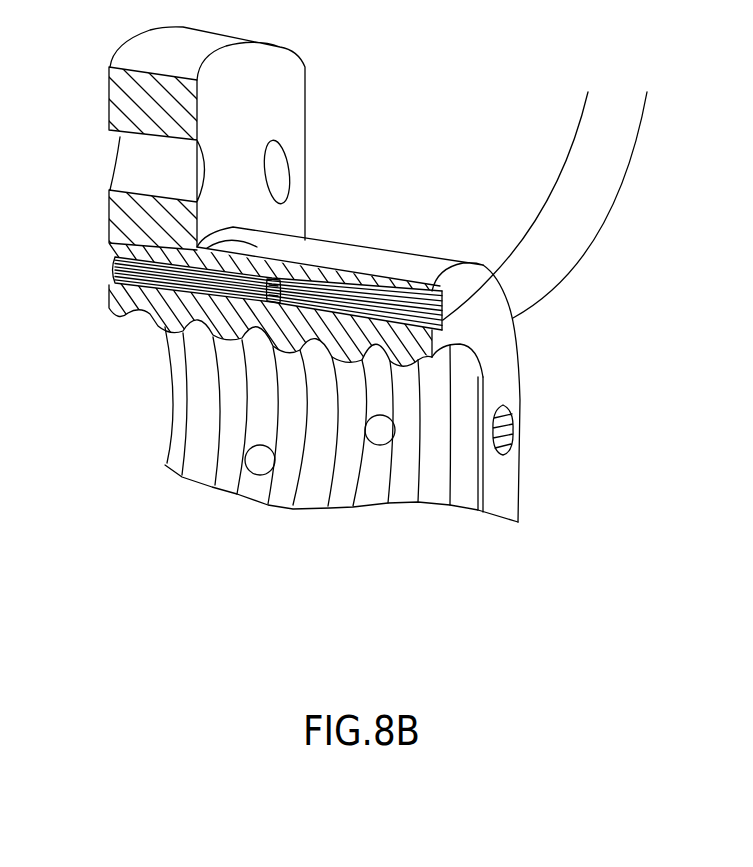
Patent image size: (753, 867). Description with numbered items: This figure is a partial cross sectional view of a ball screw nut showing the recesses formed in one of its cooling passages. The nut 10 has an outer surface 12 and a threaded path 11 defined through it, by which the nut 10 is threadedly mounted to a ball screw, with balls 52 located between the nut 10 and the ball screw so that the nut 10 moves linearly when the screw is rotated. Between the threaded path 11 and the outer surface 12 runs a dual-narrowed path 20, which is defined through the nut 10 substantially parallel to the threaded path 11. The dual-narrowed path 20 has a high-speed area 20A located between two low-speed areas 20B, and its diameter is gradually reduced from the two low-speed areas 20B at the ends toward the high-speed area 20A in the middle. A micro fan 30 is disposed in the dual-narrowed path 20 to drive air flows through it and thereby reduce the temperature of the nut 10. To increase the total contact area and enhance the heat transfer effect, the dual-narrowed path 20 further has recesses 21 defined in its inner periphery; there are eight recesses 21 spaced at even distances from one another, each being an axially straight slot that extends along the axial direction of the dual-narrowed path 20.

The nut 10 is at (527, 353).
The threaded path 11 is at (437, 462).
The outer surface 12 is at (205, 246).
The dual-narrowed path 20 is at (677, 63).
The high-speed area 20A is at (295, 262).
The low-speed area 20B is at (170, 250).
The recess 21 is at (553, 189).
The micro fan 30 is at (245, 290).
The ball 52 is at (340, 558).